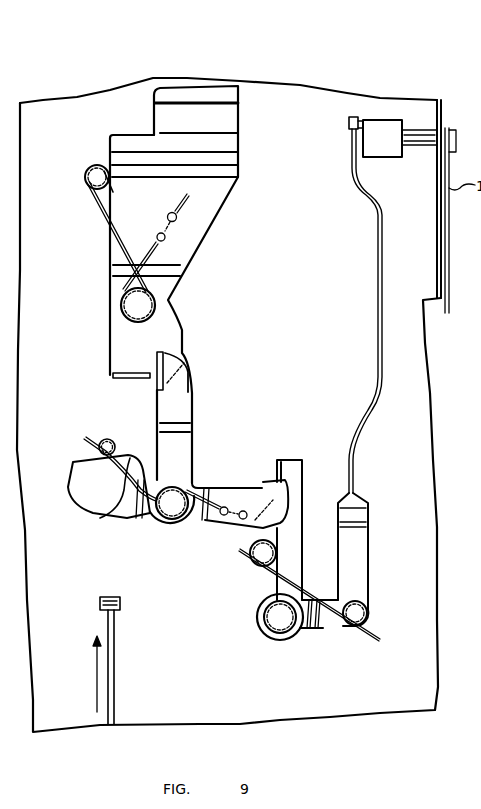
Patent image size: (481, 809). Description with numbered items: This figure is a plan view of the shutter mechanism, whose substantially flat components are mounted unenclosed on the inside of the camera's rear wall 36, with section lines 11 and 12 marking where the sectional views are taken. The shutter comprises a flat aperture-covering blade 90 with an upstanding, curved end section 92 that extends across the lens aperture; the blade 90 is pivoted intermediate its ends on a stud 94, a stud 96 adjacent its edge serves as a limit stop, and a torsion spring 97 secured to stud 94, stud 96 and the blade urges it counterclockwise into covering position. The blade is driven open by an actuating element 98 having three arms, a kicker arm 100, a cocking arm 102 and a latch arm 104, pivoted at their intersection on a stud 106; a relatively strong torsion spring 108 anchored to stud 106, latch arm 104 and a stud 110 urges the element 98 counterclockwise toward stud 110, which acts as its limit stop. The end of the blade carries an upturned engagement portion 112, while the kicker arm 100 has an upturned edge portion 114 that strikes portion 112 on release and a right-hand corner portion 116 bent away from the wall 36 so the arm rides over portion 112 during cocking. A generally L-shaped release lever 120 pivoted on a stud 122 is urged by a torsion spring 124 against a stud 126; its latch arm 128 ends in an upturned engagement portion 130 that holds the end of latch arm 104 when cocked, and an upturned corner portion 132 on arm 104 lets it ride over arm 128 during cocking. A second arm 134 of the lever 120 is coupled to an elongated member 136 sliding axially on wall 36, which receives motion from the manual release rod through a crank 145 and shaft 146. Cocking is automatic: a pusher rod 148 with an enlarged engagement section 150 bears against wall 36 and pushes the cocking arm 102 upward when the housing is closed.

The section line 11- 11 is at (307, 160).
The side wall 12 is at (110, 370).
The rear wall 36 is at (314, 320).
The aperture-covering blade 90 is at (215, 217).
The end section 92 is at (218, 92).
The stud 94 is at (150, 305).
The stud 96 is at (93, 165).
The torsion spring 97 is at (118, 241).
The actuating element 98 is at (195, 418).
The kicker arm 100 is at (192, 452).
The cocking arm 102 is at (73, 467).
The latch arm 104 is at (238, 488).
The stud 106 is at (155, 527).
The torsion spring 108 is at (103, 520).
The stud 110 is at (99, 441).
The upturned engagement portion 112 is at (143, 379).
The upturned edge portion 114 is at (157, 357).
The right-hand corner portion 116 is at (187, 360).
The release lever 120 is at (311, 632).
The stud 122 is at (268, 618).
The torsion spring 124 is at (318, 628).
The stud 126 is at (262, 560).
The latch arm 128 is at (300, 488).
The upturned engagement portion 130 is at (275, 460).
The corner portion 132 is at (290, 510).
The second arm 134 is at (343, 595).
The elongated member 136 is at (375, 197).
The crank 145 is at (351, 117).
The shaft 146 is at (420, 132).
The pusher rod 148 is at (116, 680).
The enlarged engagement section 150 is at (121, 603).